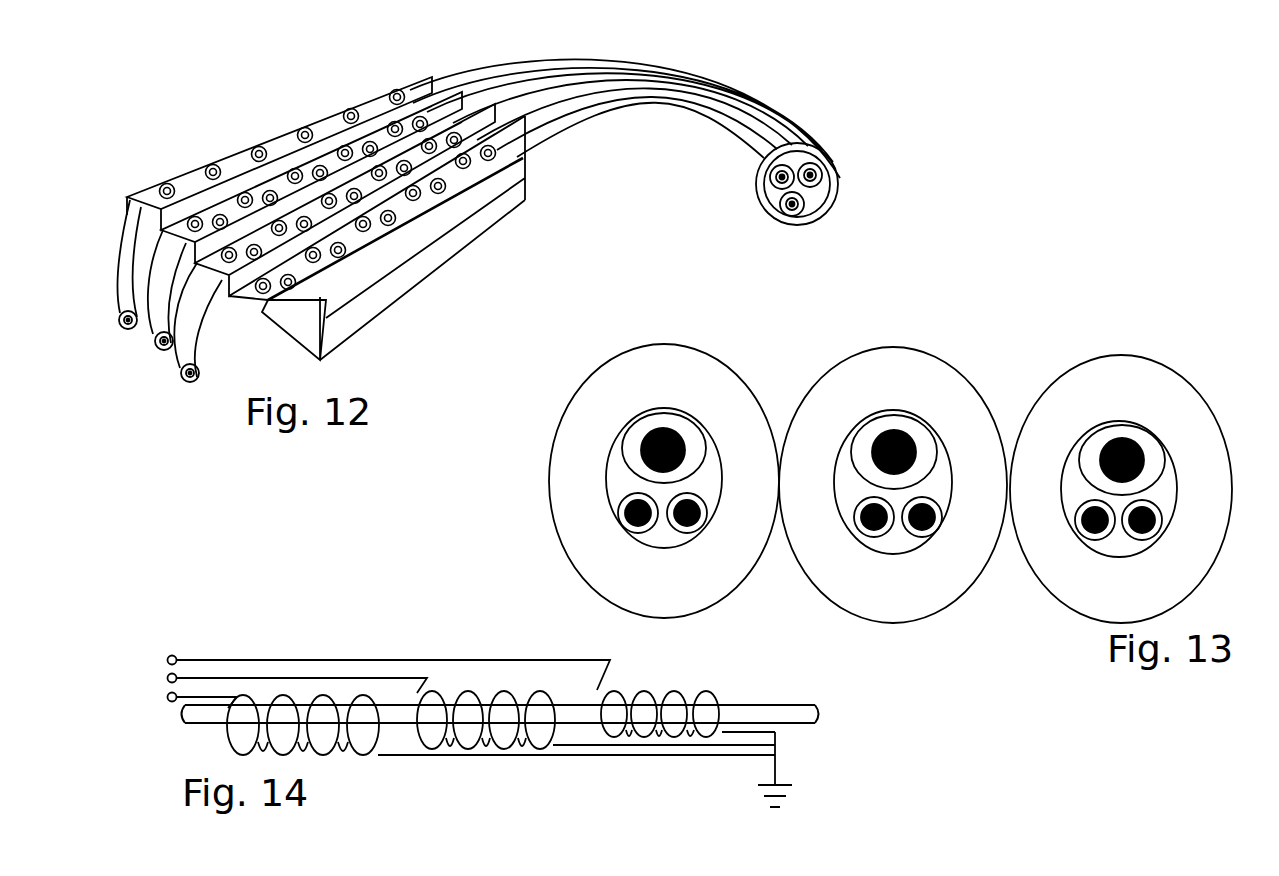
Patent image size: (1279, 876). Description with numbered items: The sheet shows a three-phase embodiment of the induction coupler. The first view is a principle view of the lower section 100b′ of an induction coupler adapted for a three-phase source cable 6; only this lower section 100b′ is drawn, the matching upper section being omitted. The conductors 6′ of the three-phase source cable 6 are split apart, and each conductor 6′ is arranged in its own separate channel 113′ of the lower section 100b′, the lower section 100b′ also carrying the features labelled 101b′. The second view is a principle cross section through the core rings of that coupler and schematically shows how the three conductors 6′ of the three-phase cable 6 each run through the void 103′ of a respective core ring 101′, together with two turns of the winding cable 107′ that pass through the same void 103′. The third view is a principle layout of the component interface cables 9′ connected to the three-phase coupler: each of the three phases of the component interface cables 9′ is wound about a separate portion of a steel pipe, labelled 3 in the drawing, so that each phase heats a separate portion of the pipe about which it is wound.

In FIG. 12, the lower section 100b′ is at (392, 292).
In FIG. 12, the channel 113′ is at (150, 210).
In FIG. 12, the fiber receiving holes 101b′ is at (218, 166).
In FIG. 12, the conductor 6′ is at (436, 82).
In FIG. 13, the conductor 6′ is at (677, 427).
In FIG. 12, the three-phase source cable 6 is at (865, 186).
In FIG. 13, the core ring 101′ is at (668, 363).
In FIG. 13, the void 103′ is at (938, 480).
In FIG. 13, the winding cable 107′ is at (877, 553).
In FIG. 14, the cable 3 is at (185, 723).
In FIG. 14, the component interface cable 9′ is at (357, 745).